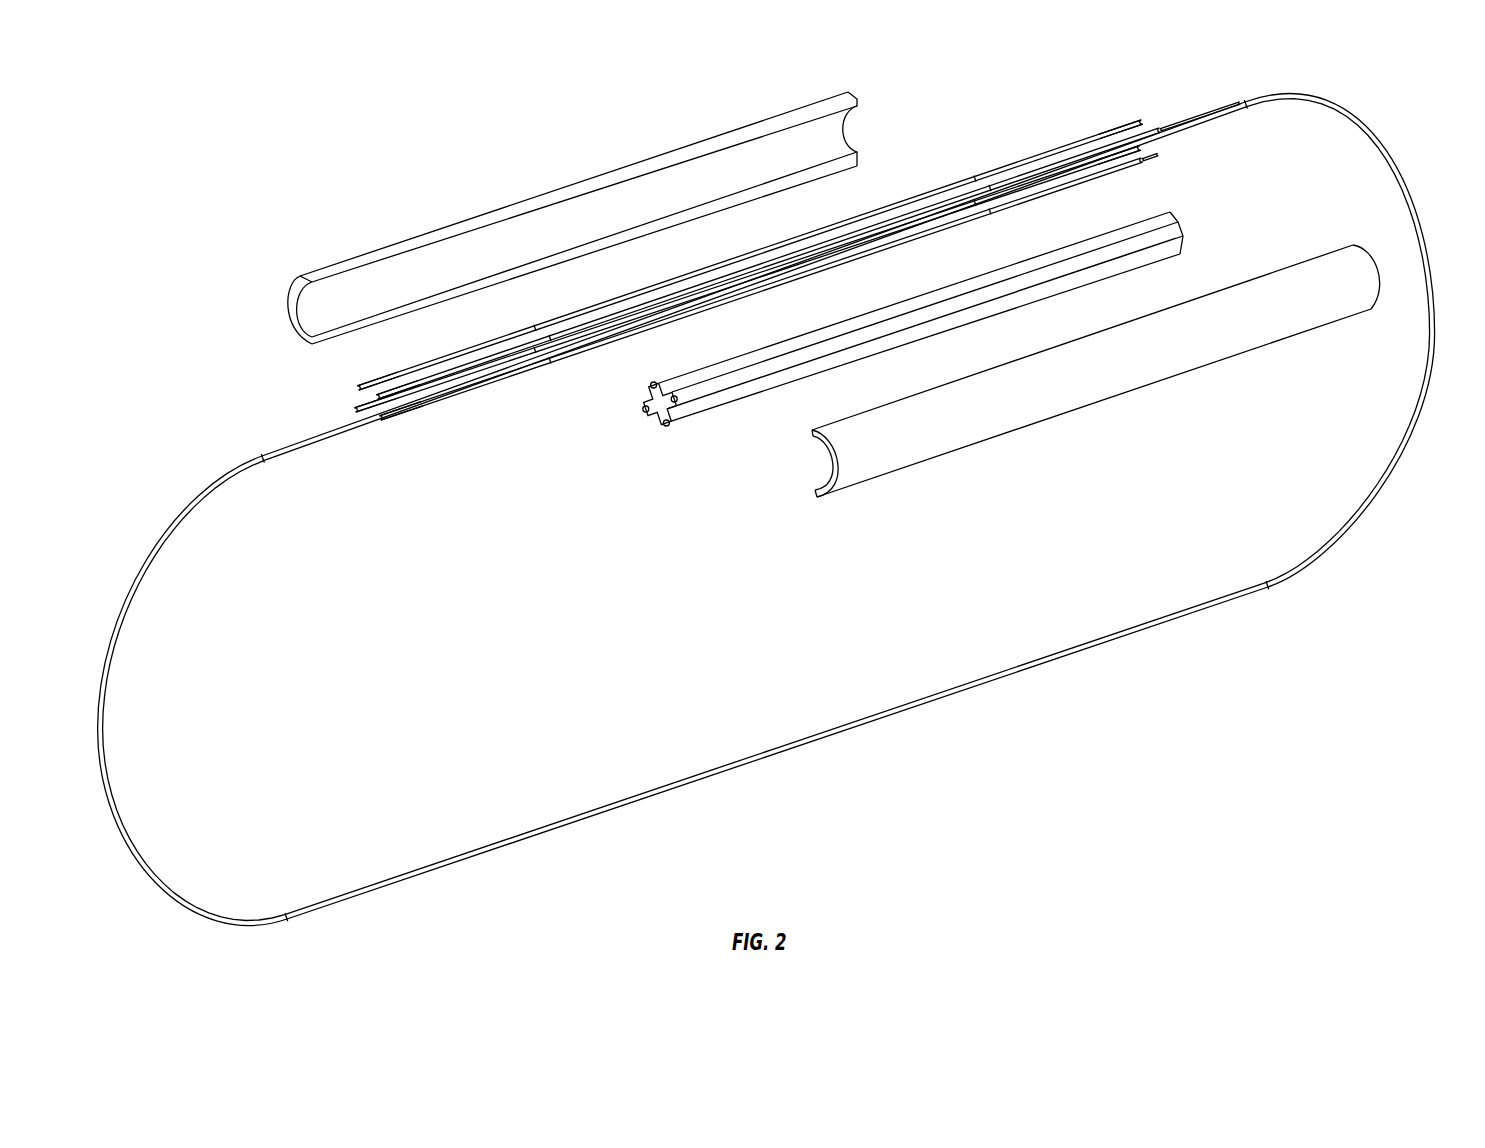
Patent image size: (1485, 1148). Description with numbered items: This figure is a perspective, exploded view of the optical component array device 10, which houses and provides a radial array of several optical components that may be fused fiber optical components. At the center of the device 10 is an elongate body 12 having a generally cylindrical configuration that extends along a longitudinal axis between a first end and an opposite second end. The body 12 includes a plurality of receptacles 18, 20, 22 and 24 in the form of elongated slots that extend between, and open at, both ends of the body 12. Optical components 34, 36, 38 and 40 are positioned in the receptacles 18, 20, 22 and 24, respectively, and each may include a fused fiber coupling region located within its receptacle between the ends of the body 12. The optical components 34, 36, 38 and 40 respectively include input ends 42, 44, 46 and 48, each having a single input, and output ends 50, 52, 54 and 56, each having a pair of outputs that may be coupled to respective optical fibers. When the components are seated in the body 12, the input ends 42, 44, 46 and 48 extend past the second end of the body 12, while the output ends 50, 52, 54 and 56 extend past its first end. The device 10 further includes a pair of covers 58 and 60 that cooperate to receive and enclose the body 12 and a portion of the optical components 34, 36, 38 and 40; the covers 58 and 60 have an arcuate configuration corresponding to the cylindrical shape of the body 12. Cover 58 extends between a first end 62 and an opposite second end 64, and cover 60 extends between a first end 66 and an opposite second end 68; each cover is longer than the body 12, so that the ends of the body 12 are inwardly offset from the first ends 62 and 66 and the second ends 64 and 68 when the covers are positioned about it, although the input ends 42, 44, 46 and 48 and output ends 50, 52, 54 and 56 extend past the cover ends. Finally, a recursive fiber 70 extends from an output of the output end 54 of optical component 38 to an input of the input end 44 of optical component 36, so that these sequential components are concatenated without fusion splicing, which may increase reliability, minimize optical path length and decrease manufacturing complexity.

The optical component array device 10 is at (297, 100).
The elongate body 12 is at (877, 347).
The receptacle 18 is at (645, 397).
The receptacle 20 is at (677, 418).
The receptacle 22 is at (672, 427).
The receptacle 24 is at (648, 417).
The optical component 34 is at (718, 240).
The optical component 36 is at (767, 237).
The optical component 38 is at (717, 285).
The optical component 40 is at (741, 319).
The input end 42 is at (1103, 130).
The input end 44 is at (1160, 133).
The input end 46 is at (1093, 170).
The input end 48 is at (1143, 163).
The output end 50 is at (358, 388).
The output end 52 is at (377, 397).
The output end 54 is at (380, 418).
The output end 56 is at (357, 410).
The cover 58 is at (569, 198).
The cover 60 is at (1112, 355).
The first end 62 is at (292, 300).
The second end 64 is at (855, 93).
The first end 66 is at (805, 490).
The second end 68 is at (1382, 285).
The recursive fiber 70 is at (855, 728).